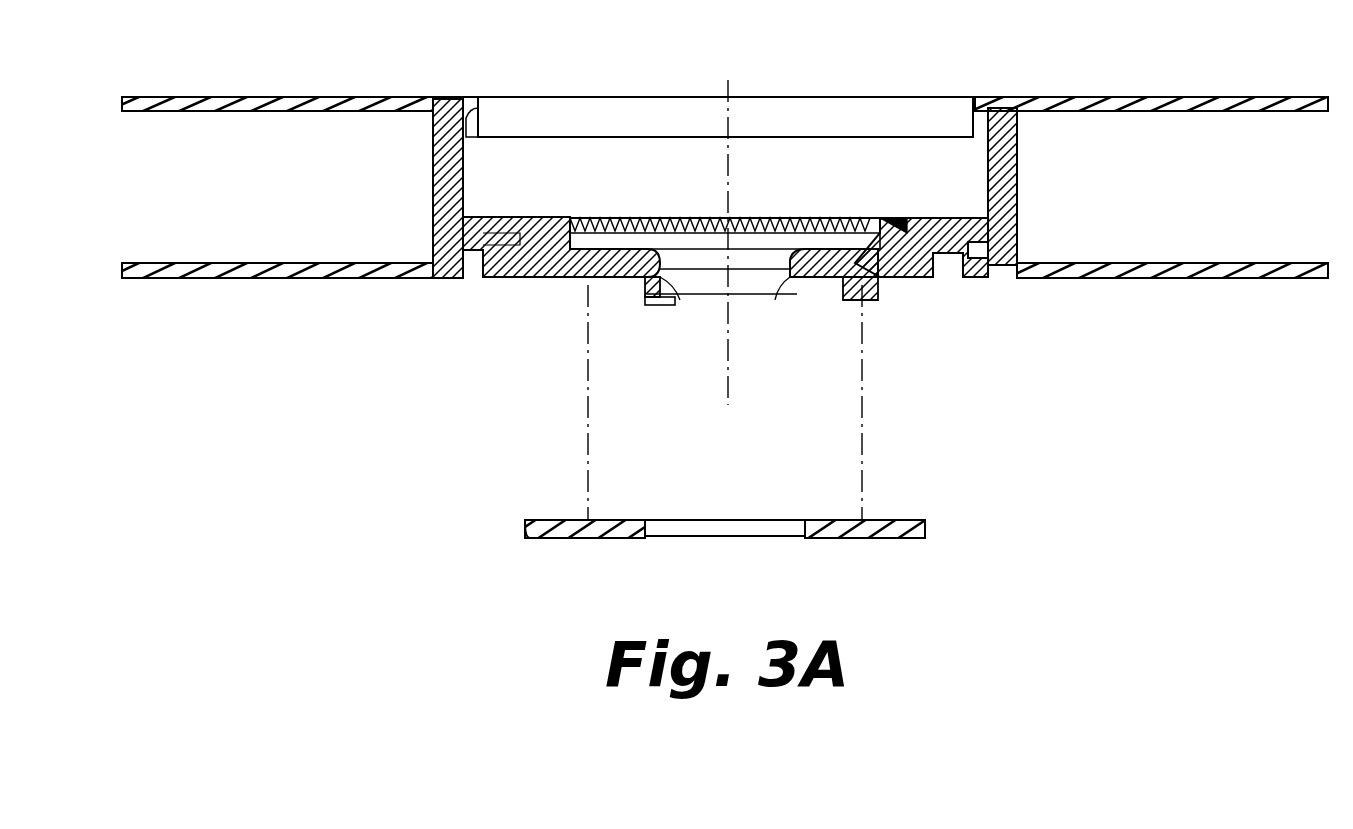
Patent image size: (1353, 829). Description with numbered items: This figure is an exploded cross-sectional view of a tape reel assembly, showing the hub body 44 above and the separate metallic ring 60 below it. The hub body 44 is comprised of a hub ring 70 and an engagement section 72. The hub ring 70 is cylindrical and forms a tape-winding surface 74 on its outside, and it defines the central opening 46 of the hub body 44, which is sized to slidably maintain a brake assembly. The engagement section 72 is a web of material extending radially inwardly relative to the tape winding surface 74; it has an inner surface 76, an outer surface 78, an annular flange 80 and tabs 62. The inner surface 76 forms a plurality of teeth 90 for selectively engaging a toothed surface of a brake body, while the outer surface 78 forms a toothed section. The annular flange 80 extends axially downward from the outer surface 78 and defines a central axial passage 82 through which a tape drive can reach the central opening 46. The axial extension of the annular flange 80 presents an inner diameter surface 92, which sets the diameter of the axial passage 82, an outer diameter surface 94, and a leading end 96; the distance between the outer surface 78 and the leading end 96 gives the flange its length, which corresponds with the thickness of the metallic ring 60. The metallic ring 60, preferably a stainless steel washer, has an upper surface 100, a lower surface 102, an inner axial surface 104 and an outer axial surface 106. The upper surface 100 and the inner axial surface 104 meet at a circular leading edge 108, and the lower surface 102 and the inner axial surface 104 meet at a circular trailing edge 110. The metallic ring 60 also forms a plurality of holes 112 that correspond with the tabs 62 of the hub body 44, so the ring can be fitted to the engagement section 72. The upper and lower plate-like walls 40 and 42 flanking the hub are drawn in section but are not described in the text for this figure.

The upper wall of container 40 is at (1145, 93).
The lower wall of container 42 is at (1168, 284).
The hub body 44 is at (1040, 165).
The central opening 46 is at (464, 153).
The metallic ring 60 is at (905, 513).
The tabs 62 is at (877, 297).
The hub ring 70 is at (1030, 222).
The engagement section 72 is at (910, 216).
The tape-winding surface 74 is at (433, 166).
The inner surface 76 is at (525, 236).
The outer surface 78 is at (552, 282).
The annular flange 80 is at (648, 304).
The axial passage 82 is at (668, 282).
The teeth 90 is at (616, 216).
The inner diameter surface 92 is at (788, 278).
The outer diameter surface 94 is at (810, 280).
The leading end 96 is at (790, 296).
The upper surface 100 is at (622, 520).
The lower surface 102 is at (591, 540).
The inner axial surface 104 is at (647, 528).
The outer axial surface 106 is at (527, 524).
The leading edge 108 is at (806, 520).
The trailing edge 110 is at (800, 540).
The holes 112 is at (860, 540).